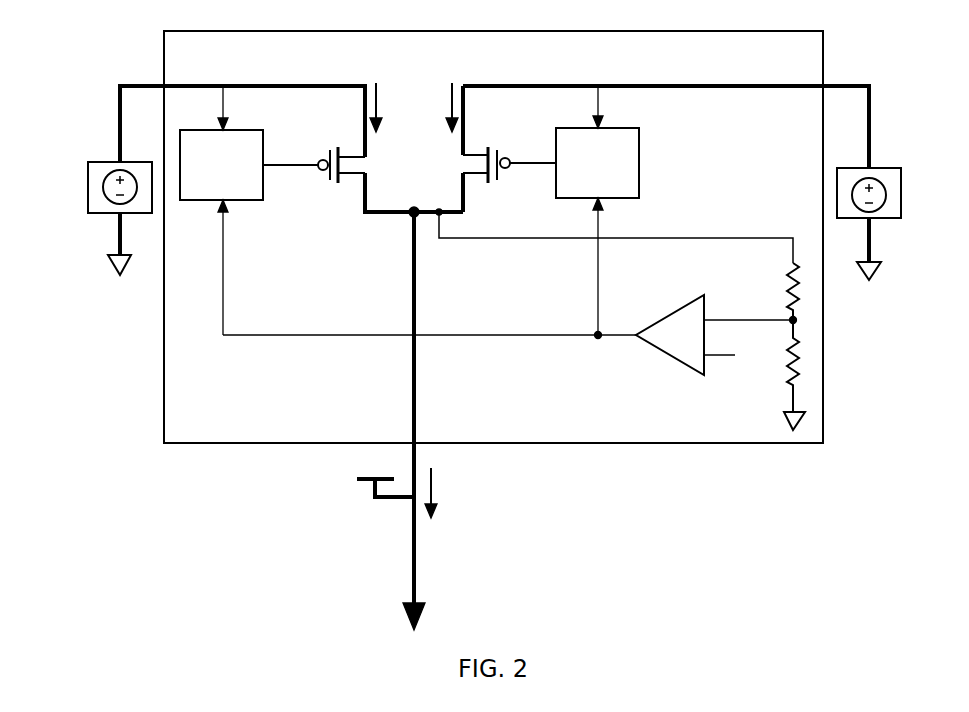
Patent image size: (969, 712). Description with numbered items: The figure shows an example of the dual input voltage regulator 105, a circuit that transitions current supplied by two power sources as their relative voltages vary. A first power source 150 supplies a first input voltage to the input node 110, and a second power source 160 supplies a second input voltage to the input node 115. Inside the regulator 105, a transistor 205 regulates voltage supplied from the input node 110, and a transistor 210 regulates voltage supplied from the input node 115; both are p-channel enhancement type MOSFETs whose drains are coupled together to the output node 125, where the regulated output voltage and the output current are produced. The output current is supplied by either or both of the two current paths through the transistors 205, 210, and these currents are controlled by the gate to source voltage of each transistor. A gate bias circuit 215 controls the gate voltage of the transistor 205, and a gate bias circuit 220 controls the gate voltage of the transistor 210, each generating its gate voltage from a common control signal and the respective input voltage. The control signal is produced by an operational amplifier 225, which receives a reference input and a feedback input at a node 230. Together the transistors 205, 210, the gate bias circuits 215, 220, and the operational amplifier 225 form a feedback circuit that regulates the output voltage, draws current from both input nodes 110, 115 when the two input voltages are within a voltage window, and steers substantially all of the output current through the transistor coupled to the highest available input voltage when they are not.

The dual input voltage regulator 105 is at (493, 237).
The input node 110 is at (119, 128).
The input node 115 is at (870, 128).
The output node 125 is at (412, 565).
The power source 150 is at (108, 217).
The power source 160 is at (885, 220).
The transistor 205 is at (328, 147).
The transistor 210 is at (500, 150).
The gate bias circuit 215 is at (265, 200).
The gate bias circuit 220 is at (642, 162).
The operational amplifier 225 is at (662, 352).
The node 230 is at (708, 322).